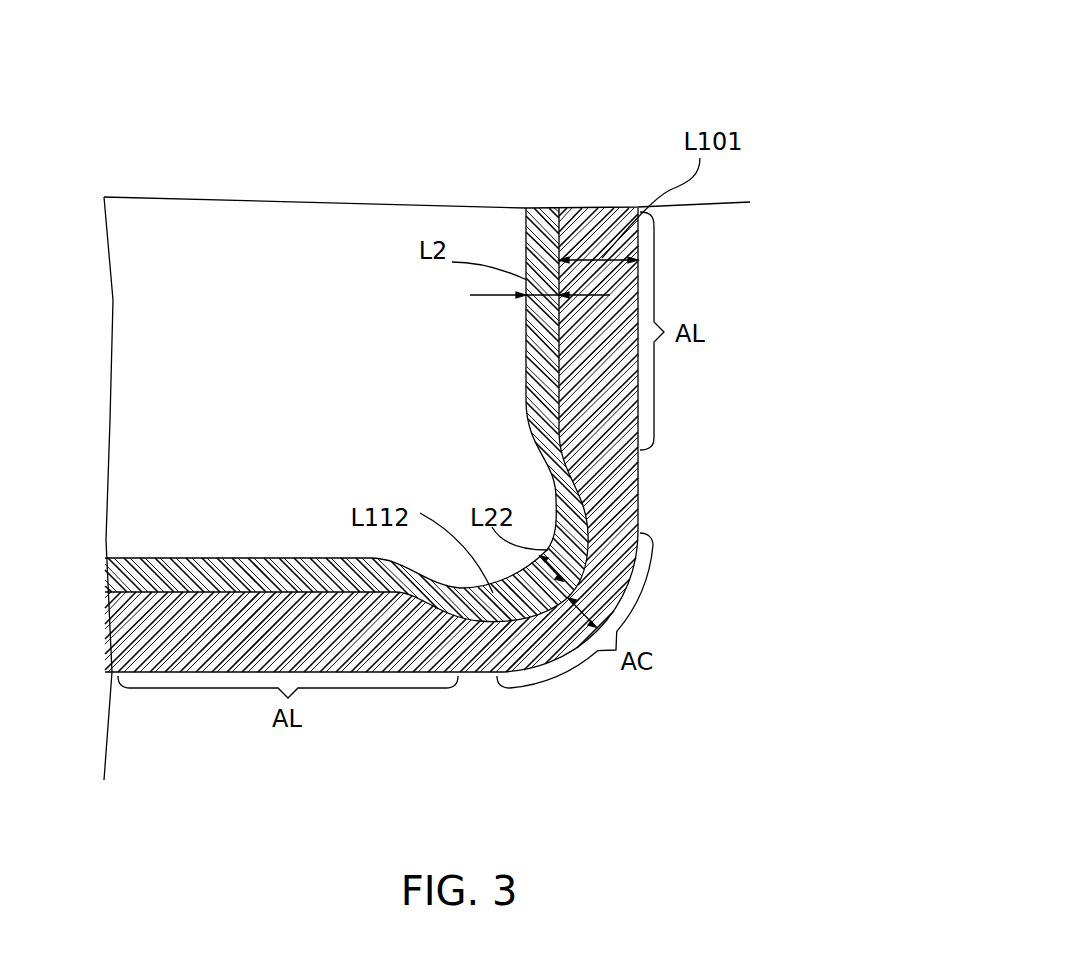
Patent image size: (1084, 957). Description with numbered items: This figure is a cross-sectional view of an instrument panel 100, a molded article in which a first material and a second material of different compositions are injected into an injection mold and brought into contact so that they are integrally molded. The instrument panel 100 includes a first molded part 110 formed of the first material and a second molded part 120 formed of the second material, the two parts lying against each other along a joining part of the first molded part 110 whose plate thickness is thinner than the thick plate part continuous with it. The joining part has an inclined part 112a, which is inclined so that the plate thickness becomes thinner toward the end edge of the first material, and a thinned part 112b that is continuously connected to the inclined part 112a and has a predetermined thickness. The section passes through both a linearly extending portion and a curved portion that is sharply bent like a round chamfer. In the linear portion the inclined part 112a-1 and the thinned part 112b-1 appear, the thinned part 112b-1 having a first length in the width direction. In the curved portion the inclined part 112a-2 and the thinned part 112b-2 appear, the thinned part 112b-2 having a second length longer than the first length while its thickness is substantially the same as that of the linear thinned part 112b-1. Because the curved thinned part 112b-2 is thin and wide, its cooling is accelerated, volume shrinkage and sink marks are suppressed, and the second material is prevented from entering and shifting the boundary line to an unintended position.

The instrument panel 100 is at (502, 421).
The first molded part 110 is at (502, 400).
The second molded part 120 is at (349, 478).
The inclined part 112a is at (502, 440).
The inclined part 112a-1 is at (598, 352).
The inclined part 112a-2 is at (604, 582).
The thinned part 112b is at (349, 518).
The thinned part 112b-1 is at (528, 326).
The thinned part 112b-2 is at (500, 600).